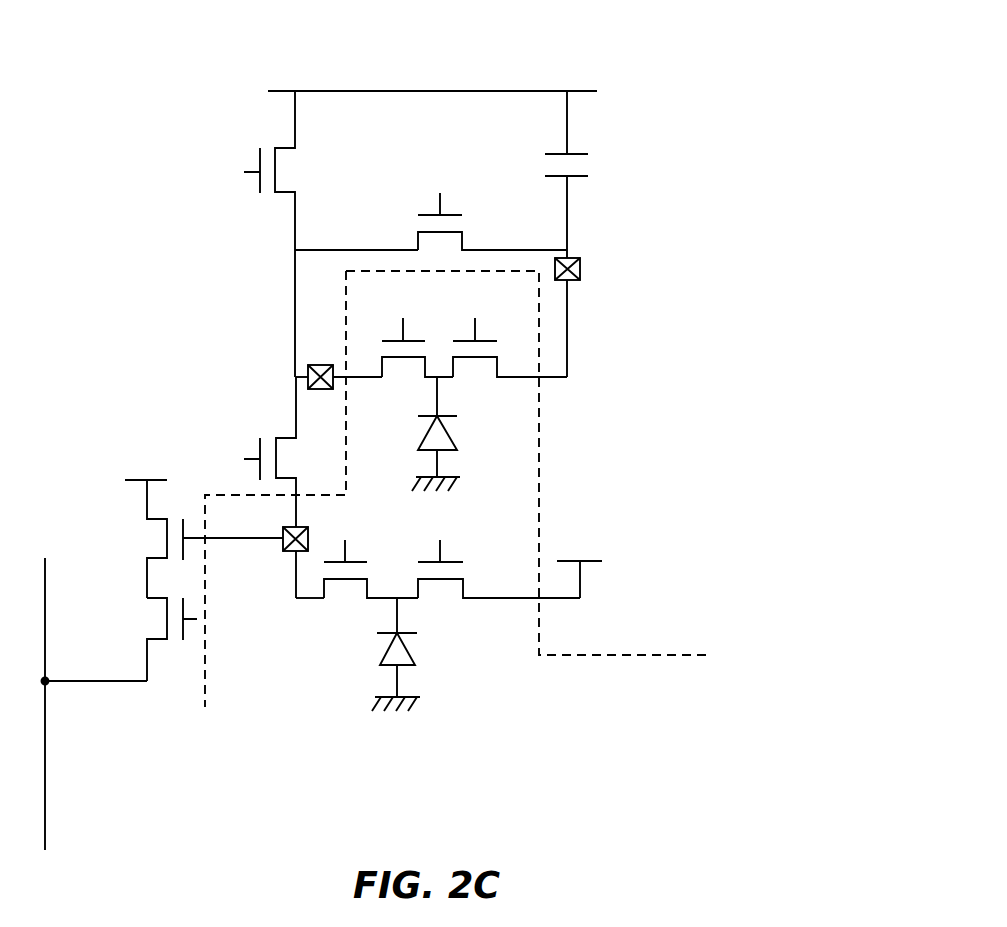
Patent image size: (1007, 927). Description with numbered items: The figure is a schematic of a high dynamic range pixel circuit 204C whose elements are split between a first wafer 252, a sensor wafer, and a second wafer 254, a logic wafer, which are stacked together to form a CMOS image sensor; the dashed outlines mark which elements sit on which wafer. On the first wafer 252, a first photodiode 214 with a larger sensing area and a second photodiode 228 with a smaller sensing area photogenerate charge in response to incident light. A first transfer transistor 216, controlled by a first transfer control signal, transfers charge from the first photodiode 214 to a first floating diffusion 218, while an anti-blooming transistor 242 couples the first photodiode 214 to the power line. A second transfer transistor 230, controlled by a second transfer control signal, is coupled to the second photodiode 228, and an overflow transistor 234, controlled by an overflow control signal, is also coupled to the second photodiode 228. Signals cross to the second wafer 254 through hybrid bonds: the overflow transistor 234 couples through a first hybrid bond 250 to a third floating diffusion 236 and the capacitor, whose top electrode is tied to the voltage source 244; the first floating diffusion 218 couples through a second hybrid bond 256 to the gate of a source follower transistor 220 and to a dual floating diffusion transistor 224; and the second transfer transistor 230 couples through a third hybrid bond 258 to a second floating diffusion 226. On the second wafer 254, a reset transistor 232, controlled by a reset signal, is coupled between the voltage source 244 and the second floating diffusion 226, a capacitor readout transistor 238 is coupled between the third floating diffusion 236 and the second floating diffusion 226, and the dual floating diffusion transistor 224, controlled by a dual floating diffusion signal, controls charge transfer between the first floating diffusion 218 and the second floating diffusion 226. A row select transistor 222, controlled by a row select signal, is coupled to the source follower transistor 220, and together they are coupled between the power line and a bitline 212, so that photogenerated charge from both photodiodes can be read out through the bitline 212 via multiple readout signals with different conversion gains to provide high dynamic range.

The pixel circuit 204C is at (650, 33).
The voltage source VRFD 244 is at (468, 69).
The reset transistor 232 is at (292, 175).
The third floating diffusion FD3 236 is at (597, 210).
The capacitor readout transistor 238 is at (418, 243).
The first hybrid bond 250 is at (580, 272).
The second floating diffusion FD2 226 is at (262, 265).
The third hybrid bond 258 is at (308, 385).
The second transfer transistor 230 is at (406, 365).
The overflow transistor 234 is at (465, 375).
The second photodiode SPD 228 is at (452, 438).
The dual floating diffusion transistor 224 is at (290, 460).
The source follower transistor 220 is at (155, 548).
The second hybrid bond 256 is at (290, 553).
The anti-blooming transistor 242 is at (447, 598).
The second wafer 254 is at (733, 636).
The first wafer 252 is at (720, 688).
The row select transistor 222 is at (157, 642).
The first floating diffusion FD1 218 is at (288, 628).
The first transfer transistor 216 is at (352, 587).
The first photodiode LPD 214 is at (380, 660).
The bitline 212 is at (46, 830).